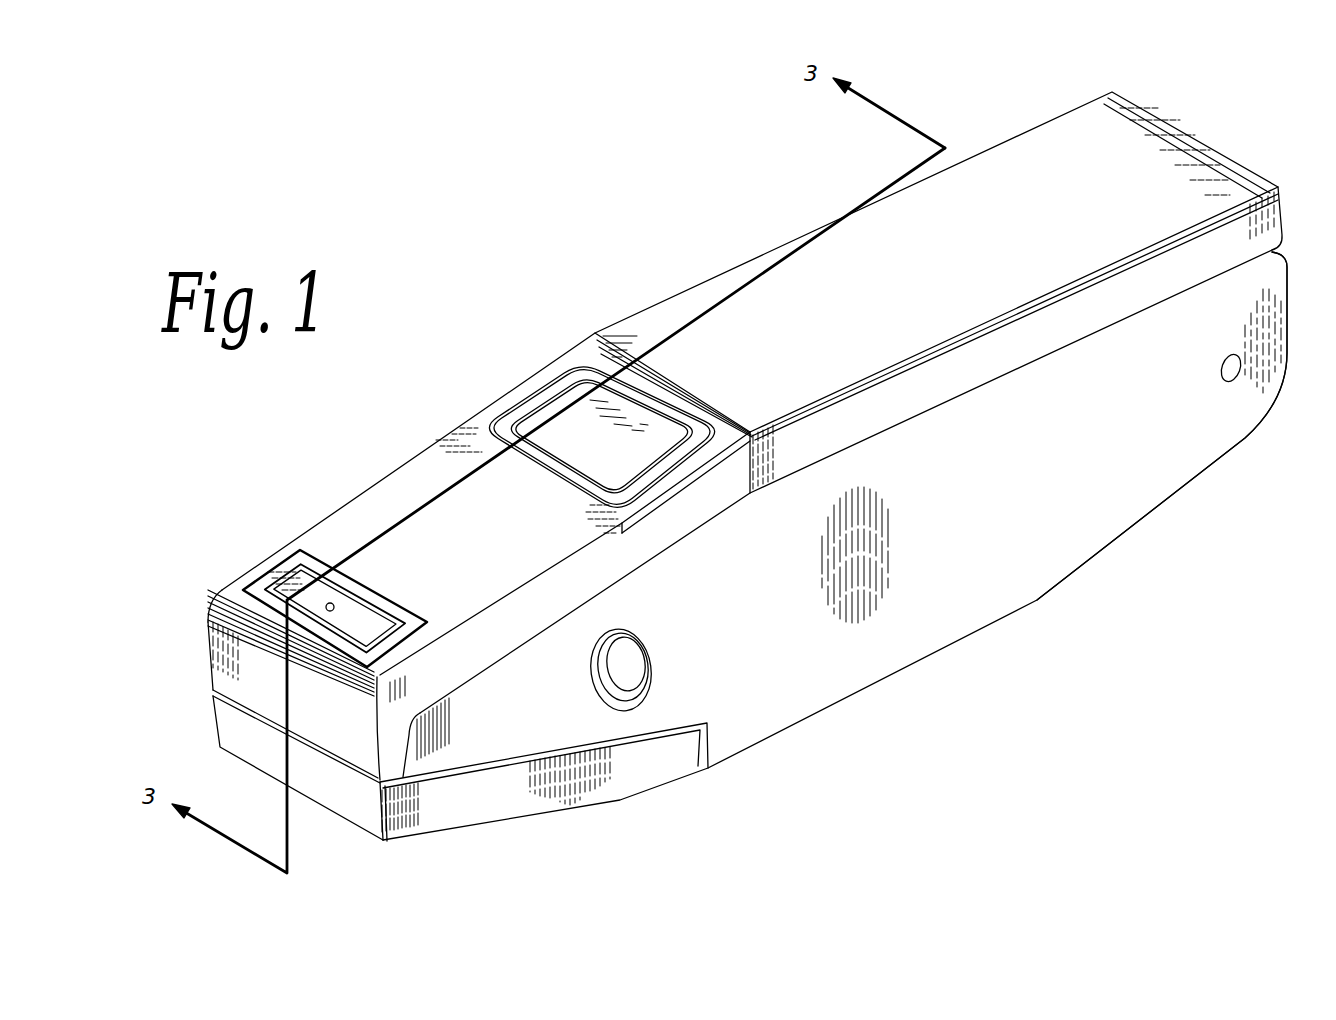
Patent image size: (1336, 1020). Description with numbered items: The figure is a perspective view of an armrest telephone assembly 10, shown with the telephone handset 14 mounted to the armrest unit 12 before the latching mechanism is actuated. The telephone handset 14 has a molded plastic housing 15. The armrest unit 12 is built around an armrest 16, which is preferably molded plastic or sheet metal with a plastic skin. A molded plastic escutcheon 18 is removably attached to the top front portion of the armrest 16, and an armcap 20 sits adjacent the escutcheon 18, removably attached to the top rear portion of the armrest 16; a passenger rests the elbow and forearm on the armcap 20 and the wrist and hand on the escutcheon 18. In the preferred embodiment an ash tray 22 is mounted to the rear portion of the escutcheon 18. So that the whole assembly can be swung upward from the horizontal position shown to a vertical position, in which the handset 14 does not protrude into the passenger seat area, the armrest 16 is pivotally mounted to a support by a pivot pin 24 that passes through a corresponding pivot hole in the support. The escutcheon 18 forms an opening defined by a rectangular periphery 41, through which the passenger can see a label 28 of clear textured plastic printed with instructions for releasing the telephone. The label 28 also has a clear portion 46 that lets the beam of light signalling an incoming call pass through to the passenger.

The armrest telephone assembly 10 is at (721, 494).
The armrest unit 12 is at (889, 675).
The telephone handset 14 is at (624, 802).
The molded plastic housing 15 is at (462, 812).
The armrest 16 is at (1092, 520).
The escutcheon 18 is at (413, 500).
The armcap 20 is at (712, 300).
The ash tray 22 is at (560, 400).
The pivot pin 24 is at (1227, 381).
The label 28 is at (323, 590).
The rectangular periphery 41 is at (262, 583).
The clear portion 46 is at (326, 610).